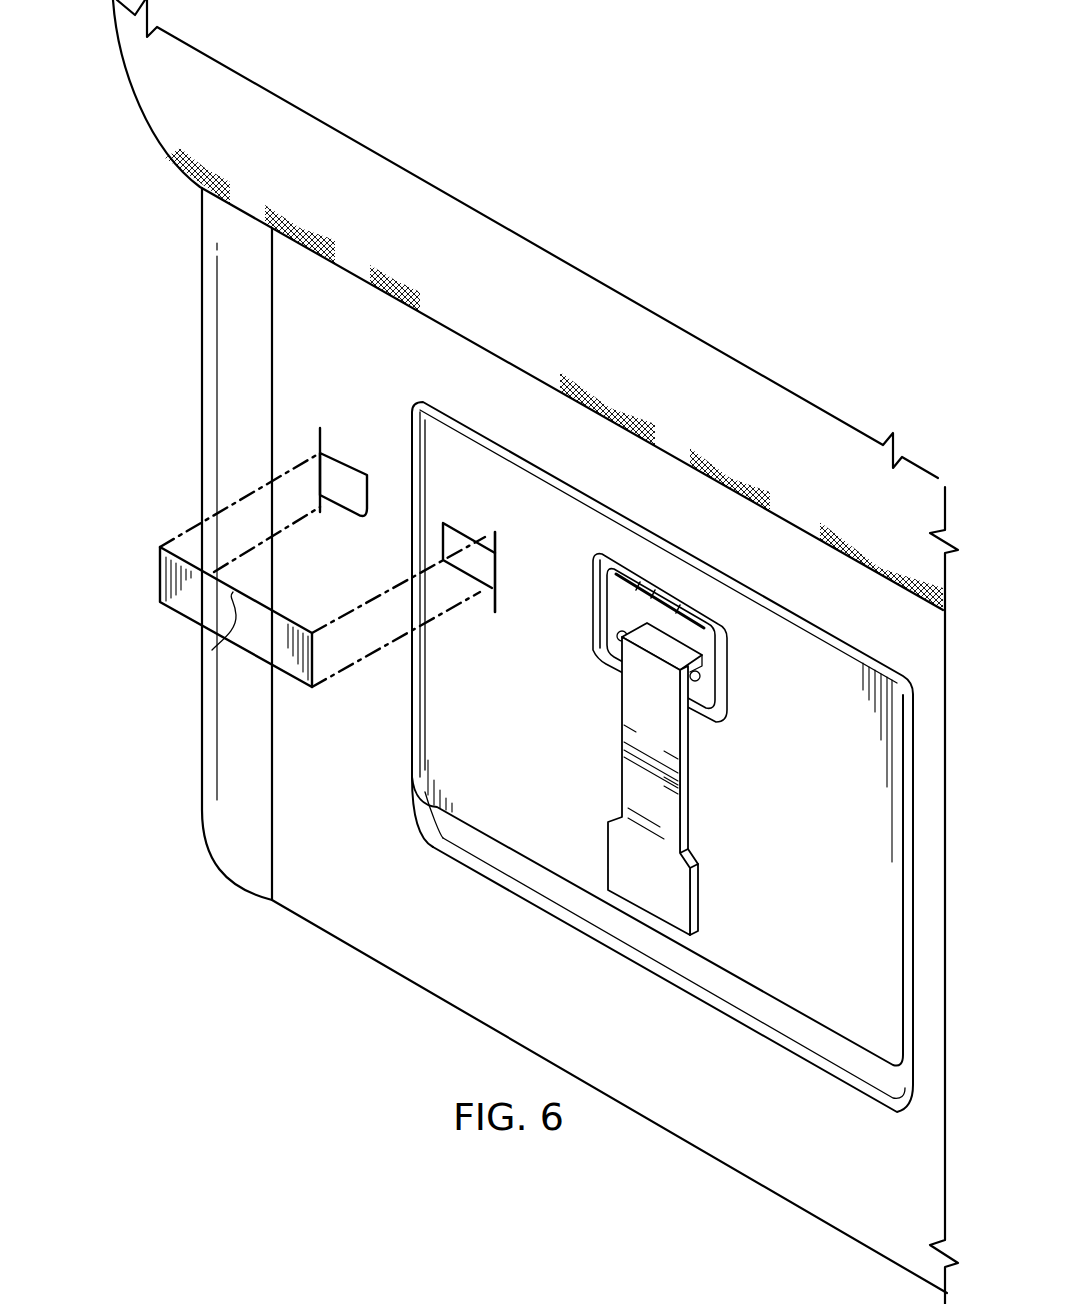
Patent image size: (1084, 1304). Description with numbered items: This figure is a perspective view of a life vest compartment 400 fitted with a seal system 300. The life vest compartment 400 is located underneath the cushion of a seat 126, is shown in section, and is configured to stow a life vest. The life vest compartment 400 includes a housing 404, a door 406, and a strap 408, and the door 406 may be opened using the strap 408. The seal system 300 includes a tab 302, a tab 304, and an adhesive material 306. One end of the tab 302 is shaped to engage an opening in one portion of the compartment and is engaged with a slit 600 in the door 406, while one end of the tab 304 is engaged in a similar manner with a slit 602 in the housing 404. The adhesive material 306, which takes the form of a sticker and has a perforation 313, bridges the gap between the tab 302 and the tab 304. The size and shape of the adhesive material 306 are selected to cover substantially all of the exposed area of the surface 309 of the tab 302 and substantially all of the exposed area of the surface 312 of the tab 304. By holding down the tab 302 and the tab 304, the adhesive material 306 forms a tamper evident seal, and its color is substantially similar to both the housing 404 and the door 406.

The seat 126 is at (122, 84).
The seal system 300 is at (384, 401).
The tab 302 is at (459, 578).
The tab 304 is at (349, 513).
The adhesive material 306 is at (158, 574).
The surface 309 is at (447, 537).
The surface 312 is at (356, 481).
The perforation 313 is at (212, 650).
The life vest compartment 400 is at (176, 746).
The housing 404 is at (383, 955).
The door 406 is at (757, 989).
The strap 408 is at (612, 857).
The slit 600 is at (487, 535).
The slit 602 is at (322, 447).